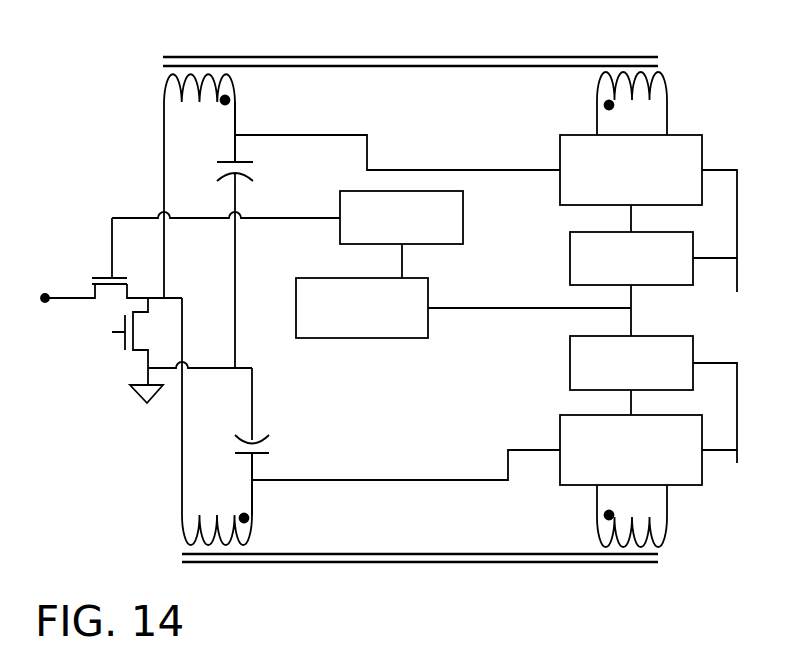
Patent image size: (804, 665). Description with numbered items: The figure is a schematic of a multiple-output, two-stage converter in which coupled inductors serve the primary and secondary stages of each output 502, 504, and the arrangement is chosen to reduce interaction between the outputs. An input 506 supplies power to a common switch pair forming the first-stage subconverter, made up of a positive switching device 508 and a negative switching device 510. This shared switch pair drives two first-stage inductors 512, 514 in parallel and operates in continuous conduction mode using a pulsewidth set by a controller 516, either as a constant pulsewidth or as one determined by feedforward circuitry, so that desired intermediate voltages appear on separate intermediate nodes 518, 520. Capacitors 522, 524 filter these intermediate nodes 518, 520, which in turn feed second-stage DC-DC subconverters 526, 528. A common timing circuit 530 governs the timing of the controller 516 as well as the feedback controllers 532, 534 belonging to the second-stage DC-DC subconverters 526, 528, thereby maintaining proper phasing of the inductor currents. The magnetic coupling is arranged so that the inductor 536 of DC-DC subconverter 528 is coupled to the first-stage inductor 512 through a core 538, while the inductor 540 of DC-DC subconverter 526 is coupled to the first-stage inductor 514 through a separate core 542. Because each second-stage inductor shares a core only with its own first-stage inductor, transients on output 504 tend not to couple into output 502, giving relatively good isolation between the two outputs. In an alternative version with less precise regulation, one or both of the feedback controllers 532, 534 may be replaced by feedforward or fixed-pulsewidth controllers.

The output 502 is at (727, 249).
The output 504 is at (739, 421).
The input 506 is at (68, 289).
The positive switching device 508 is at (102, 270).
The negative switching device 510 is at (142, 328).
The first-stage inductor 512 is at (192, 518).
The first-stage inductor 514 is at (195, 72).
The controller 516 is at (401, 218).
The intermediate node 518 is at (364, 483).
The intermediate node 520 is at (420, 165).
The capacitor 522 is at (265, 450).
The capacitor 524 is at (239, 162).
The second-stage DC-DC subconverter 526 is at (692, 168).
The second-stage DC-DC subconverter 528 is at (692, 452).
The timing circuit 530 is at (410, 320).
The feedback controller 532 is at (683, 232).
The feedback controller 534 is at (697, 338).
The inductor 536 is at (667, 527).
The core 538 is at (310, 556).
The inductor 540 is at (667, 90).
The core 542 is at (433, 70).